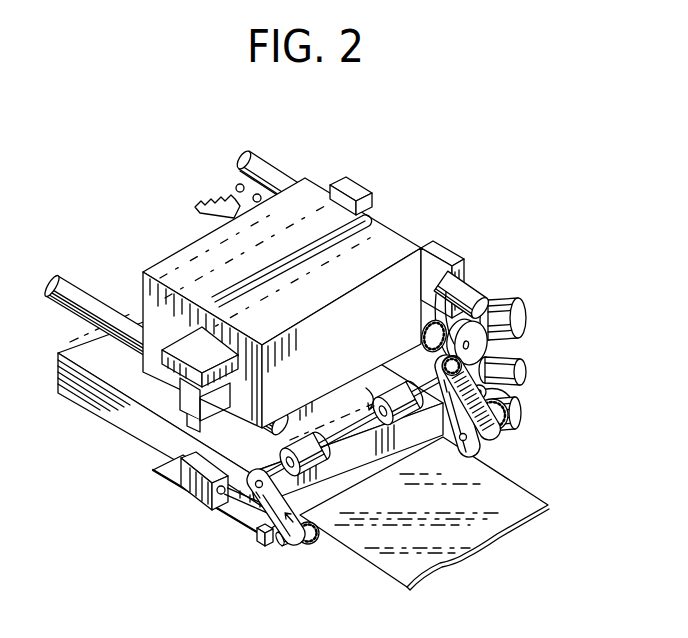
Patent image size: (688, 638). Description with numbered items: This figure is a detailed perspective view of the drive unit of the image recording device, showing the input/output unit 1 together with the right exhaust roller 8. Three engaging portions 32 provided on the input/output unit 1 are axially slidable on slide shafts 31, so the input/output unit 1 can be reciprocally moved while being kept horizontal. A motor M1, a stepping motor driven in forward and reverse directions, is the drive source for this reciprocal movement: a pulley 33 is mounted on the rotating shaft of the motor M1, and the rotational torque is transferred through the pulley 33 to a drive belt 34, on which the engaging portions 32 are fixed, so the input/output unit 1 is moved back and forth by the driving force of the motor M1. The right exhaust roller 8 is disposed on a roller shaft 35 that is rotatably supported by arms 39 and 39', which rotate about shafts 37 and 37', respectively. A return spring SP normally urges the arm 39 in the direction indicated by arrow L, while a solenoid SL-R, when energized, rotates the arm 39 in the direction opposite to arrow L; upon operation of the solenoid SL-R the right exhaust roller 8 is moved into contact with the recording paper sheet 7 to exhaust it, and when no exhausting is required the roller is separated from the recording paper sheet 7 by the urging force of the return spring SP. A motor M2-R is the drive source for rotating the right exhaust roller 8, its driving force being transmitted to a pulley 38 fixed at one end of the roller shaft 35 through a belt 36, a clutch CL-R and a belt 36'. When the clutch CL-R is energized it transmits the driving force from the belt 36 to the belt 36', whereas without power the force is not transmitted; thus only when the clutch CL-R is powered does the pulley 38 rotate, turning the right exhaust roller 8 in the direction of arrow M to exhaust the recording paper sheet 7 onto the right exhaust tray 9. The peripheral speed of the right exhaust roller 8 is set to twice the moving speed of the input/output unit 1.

The input/output unit 1 is at (400, 222).
The recording paper sheet 7 is at (122, 418).
The right exhaust roller 8 is at (383, 394).
The right exhaust tray 9 is at (539, 488).
The slide shafts 31 is at (272, 160).
The engaging portions 32 is at (352, 190).
The pulley 33 is at (452, 332).
The drive belt 34 is at (426, 343).
The roller shaft 35 is at (340, 437).
The belt 36 is at (526, 400).
The belt 36' is at (498, 387).
The shaft 37 is at (277, 564).
The shaft 37' is at (461, 467).
The pulley 38 is at (432, 362).
The arm 39 is at (316, 508).
The arm 39' is at (493, 414).
The motor M1 is at (517, 313).
The motor M2-R is at (520, 373).
The clutch CL-R is at (508, 431).
The solenoid SL-R is at (195, 497).
The return spring SP is at (300, 548).
The arrow L is at (310, 517).
The arrow M is at (358, 398).